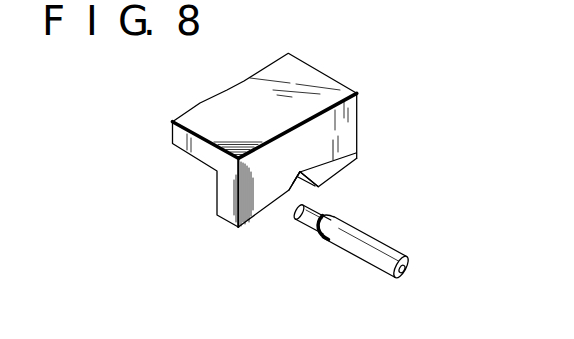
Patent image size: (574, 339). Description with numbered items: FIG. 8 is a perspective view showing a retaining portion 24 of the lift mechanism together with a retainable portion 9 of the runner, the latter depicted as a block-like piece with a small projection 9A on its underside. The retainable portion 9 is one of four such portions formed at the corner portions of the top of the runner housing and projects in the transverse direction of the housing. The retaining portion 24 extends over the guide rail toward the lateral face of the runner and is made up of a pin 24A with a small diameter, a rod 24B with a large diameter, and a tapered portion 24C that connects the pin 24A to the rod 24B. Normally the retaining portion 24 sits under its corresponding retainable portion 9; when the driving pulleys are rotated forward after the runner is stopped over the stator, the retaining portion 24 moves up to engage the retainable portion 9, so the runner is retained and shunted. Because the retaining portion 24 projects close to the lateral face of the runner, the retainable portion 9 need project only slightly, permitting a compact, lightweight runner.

The retainable portion 9 is at (318, 72).
The projection of block 9A is at (356, 153).
The retaining portion 24 is at (359, 245).
The pin 24A is at (298, 224).
The rod 24B is at (357, 257).
The tapered portion 24C is at (332, 214).